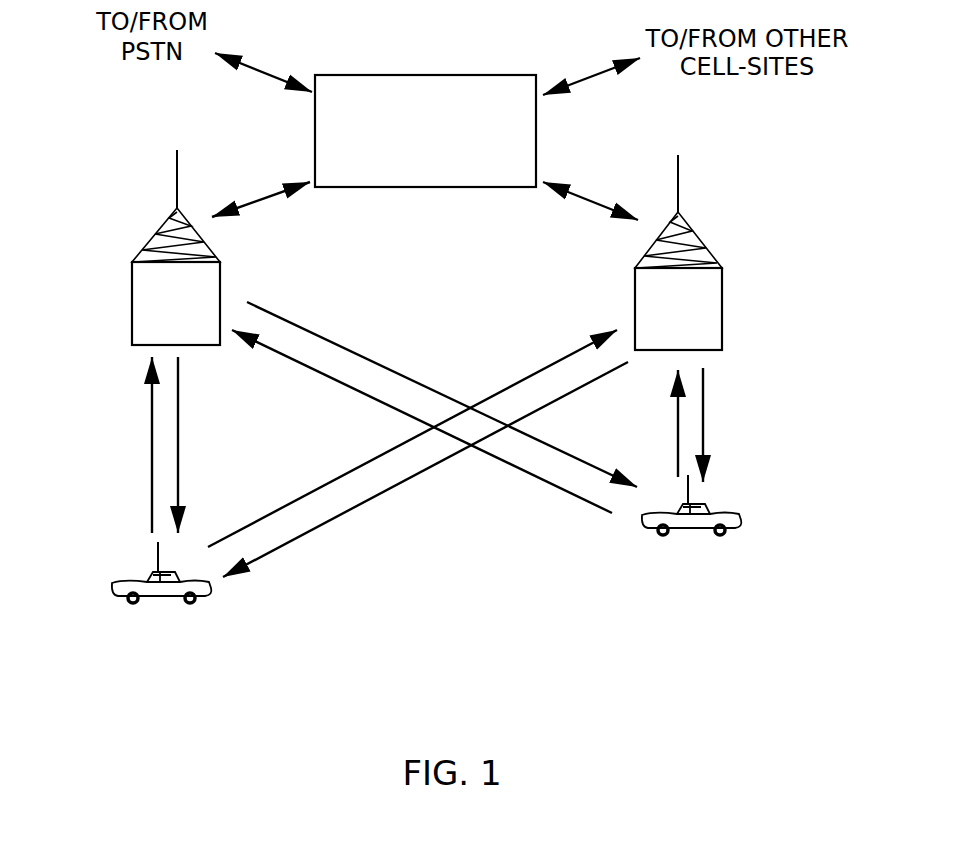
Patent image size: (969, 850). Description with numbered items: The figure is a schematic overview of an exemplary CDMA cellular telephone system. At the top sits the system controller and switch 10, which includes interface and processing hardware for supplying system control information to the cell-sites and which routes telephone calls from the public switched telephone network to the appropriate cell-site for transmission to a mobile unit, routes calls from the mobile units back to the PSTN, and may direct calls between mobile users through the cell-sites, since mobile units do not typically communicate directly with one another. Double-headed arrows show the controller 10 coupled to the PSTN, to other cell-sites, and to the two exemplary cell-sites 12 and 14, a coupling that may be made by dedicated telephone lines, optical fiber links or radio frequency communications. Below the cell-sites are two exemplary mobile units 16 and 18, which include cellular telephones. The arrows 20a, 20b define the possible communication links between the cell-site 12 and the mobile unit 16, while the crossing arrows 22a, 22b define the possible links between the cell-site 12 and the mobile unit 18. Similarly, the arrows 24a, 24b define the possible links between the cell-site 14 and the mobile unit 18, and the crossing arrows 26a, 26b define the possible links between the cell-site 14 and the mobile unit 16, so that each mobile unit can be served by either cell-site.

The system controller and switch 10 is at (465, 75).
The cell-site 12 is at (160, 230).
The cell-site 14 is at (700, 233).
The mobile unit 16 is at (172, 603).
The mobile unit 18 is at (702, 533).
The arrow 20a is at (180, 455).
The arrow 20b is at (150, 420).
The arrow 22a is at (352, 348).
The arrow 22b is at (310, 372).
The arrow 24a is at (705, 417).
The arrow 24b is at (675, 422).
The arrow 26a is at (405, 477).
The arrow 26b is at (560, 358).